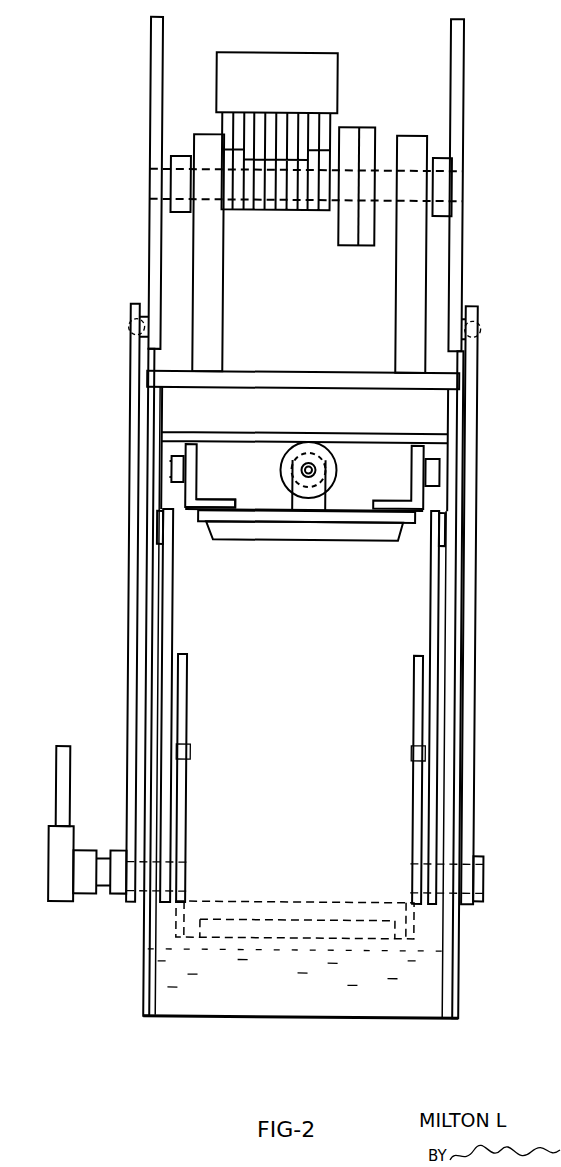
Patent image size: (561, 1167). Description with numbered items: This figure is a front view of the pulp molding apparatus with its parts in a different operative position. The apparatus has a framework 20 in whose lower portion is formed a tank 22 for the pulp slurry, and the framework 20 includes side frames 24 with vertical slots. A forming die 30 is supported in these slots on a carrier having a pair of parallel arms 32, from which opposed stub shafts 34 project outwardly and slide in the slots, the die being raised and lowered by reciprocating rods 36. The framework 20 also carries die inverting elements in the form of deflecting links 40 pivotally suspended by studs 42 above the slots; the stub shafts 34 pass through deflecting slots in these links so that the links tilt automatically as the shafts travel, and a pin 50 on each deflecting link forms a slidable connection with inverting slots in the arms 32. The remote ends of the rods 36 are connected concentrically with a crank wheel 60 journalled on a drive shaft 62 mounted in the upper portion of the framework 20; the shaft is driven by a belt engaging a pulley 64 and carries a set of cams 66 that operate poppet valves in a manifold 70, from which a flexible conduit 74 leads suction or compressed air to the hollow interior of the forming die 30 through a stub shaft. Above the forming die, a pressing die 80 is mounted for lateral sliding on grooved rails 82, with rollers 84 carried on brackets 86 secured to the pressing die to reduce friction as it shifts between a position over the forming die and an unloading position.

The framework 20 is at (458, 372).
The tank 22 is at (446, 940).
The side frames 24 is at (150, 620).
The forming die 30 is at (343, 902).
The arms 32 is at (181, 655).
The stub shafts 34 is at (160, 860).
The reciprocating rods 36 is at (133, 573).
The deflecting links 40 is at (173, 600).
The studs 42 is at (162, 545).
The pin 50 is at (413, 757).
The crank wheel 60 is at (146, 107).
The drive shaft 62 is at (385, 170).
The pulley 64 is at (363, 127).
The cams 66 is at (320, 150).
The manifold 70 is at (212, 82).
The conduit 74 is at (72, 775).
The pressing die 80 is at (340, 540).
The grooved rails 82 is at (166, 447).
The rollers 84 is at (170, 470).
The brackets 86 is at (208, 505).